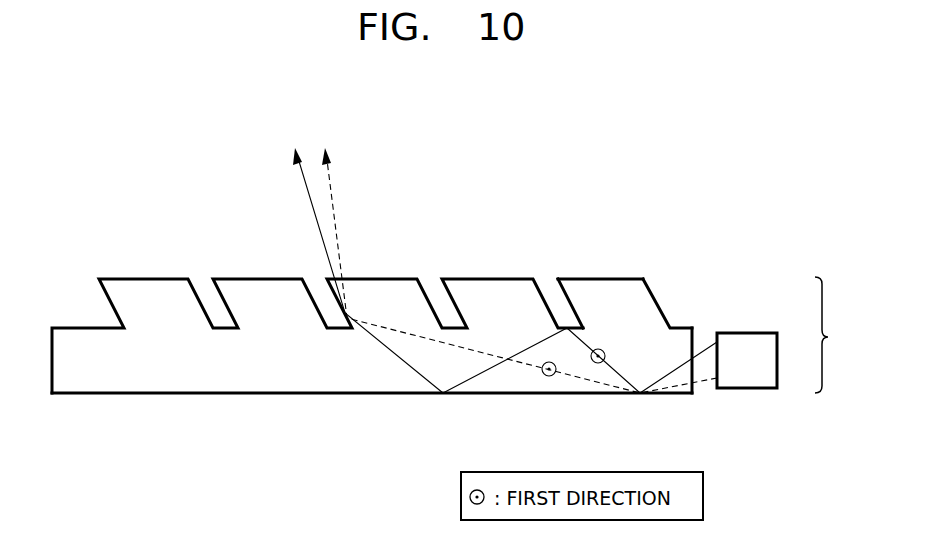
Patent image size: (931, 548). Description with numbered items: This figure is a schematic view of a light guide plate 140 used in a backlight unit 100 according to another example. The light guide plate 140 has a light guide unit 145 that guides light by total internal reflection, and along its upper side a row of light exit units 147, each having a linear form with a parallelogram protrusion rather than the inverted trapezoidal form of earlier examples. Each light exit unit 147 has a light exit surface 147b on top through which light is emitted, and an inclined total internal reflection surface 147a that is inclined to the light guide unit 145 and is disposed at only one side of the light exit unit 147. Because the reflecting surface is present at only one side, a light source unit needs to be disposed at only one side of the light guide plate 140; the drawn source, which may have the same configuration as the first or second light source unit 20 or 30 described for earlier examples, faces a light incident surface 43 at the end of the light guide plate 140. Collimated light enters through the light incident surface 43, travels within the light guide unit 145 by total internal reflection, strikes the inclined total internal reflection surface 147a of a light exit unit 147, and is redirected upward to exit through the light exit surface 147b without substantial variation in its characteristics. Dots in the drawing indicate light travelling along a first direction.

The light guide plate 140 is at (406, 355).
The light guide unit 145 is at (382, 385).
The light exit unit 147 is at (609, 278).
The inclined total internal reflection surface 147a is at (562, 302).
The light exit surface 147b is at (613, 280).
The second light incident surface 43 is at (695, 338).
The first light source unit 20 is at (746, 390).
The second light source unit 30 is at (747, 380).
The backlight unit 100 is at (844, 335).